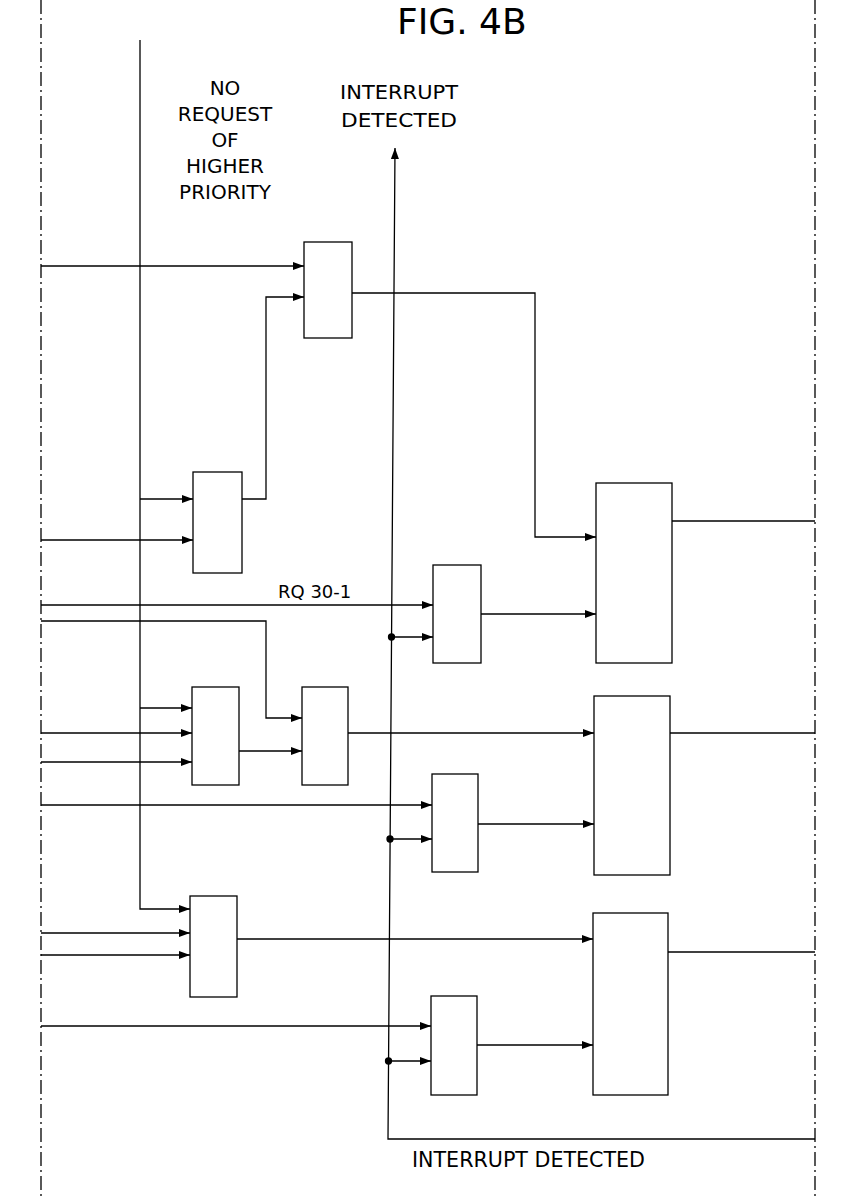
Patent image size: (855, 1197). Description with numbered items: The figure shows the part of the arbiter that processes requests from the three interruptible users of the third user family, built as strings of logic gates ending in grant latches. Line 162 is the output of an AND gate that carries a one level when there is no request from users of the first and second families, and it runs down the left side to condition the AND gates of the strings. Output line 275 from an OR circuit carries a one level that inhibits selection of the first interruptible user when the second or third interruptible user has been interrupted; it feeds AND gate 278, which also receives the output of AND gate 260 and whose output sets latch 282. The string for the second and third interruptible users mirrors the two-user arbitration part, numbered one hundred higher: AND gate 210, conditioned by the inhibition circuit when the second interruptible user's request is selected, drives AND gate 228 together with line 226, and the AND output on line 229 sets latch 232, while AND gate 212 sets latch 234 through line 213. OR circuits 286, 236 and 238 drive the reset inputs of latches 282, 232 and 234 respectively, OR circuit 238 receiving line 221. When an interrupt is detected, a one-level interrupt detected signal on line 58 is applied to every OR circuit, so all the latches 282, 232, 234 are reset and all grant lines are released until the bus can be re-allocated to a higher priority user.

The interrupt detected signal output line 58 is at (738, 1135).
The AND gate output line 162 is at (143, 73).
The OR circuit output line 275 is at (185, 265).
The AND gate 278 is at (335, 240).
The AND gate 260 is at (223, 470).
The signal line 226 is at (266, 660).
The AND gate 210 is at (220, 685).
The AND gate 228 is at (330, 685).
The signal line 229 is at (512, 731).
The OR circuit 286 is at (465, 563).
The OR circuit 236 is at (479, 790).
The OR circuit 238 is at (460, 993).
The latch 282 is at (675, 503).
The latch 232 is at (672, 713).
The latch 234 is at (668, 928).
The AND gate 212 is at (226, 893).
The signal line 213 is at (316, 939).
The signal line 221 is at (200, 1028).